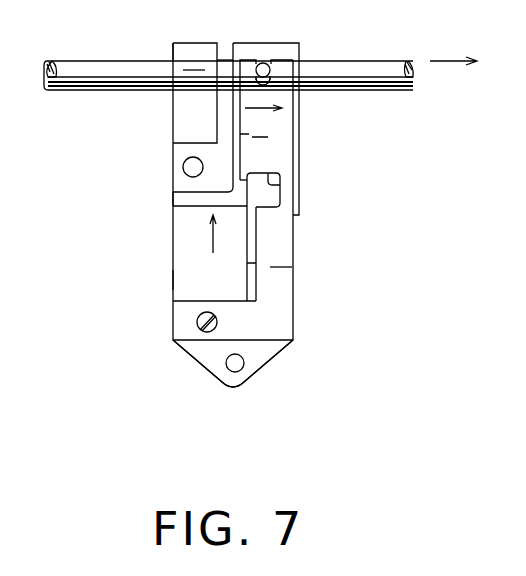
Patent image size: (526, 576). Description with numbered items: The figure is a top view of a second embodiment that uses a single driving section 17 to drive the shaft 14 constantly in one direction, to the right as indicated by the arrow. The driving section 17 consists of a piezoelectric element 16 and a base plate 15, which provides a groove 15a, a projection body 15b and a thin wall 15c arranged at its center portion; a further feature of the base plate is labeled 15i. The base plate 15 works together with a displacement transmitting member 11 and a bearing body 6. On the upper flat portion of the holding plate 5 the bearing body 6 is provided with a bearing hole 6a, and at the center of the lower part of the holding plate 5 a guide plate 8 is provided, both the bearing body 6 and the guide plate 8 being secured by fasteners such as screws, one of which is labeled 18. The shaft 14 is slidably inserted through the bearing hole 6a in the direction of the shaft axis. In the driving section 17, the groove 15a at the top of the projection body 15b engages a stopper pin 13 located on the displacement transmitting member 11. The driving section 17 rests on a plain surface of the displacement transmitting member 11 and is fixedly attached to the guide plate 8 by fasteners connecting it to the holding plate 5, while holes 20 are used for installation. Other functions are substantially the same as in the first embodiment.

The holding plate 5 is at (240, 356).
The bearing body 6 is at (183, 107).
The bearing hole 6a is at (173, 60).
The guide plate 8 is at (256, 283).
The displacement transmitting member 11 is at (278, 48).
The stopper pin 13 is at (263, 63).
The shaft 14 is at (103, 78).
The base plate 15 is at (292, 237).
The groove 15a is at (267, 82).
The projection body 15b is at (285, 140).
The thin wall 15c is at (185, 199).
The inner block 15i is at (272, 180).
The piezoelectric element 16 is at (182, 251).
The driving section 17 is at (168, 289).
The screw 18 is at (215, 325).
The holes 20 is at (183, 167).